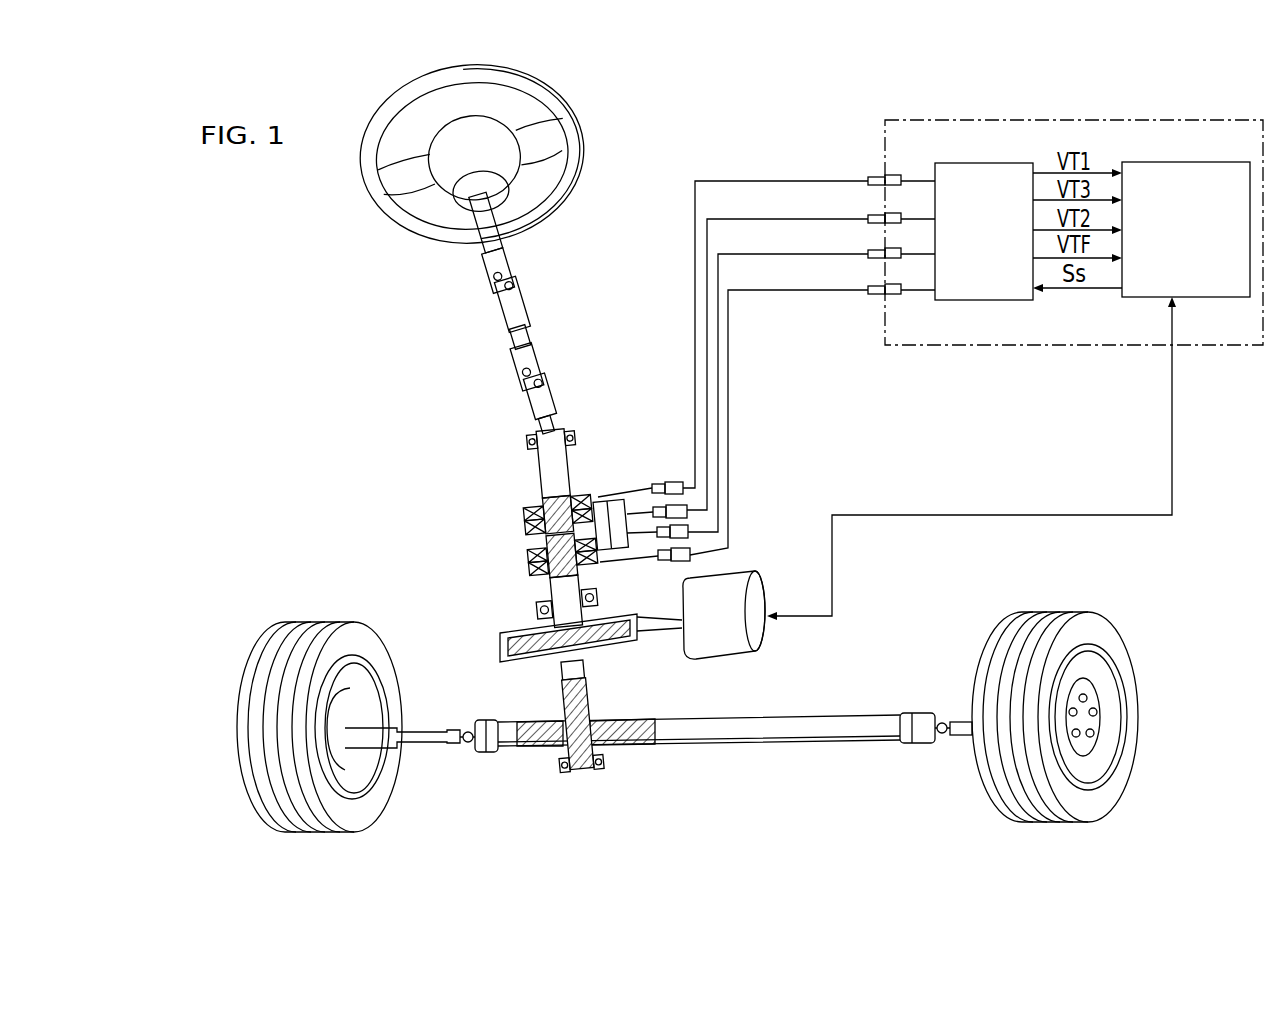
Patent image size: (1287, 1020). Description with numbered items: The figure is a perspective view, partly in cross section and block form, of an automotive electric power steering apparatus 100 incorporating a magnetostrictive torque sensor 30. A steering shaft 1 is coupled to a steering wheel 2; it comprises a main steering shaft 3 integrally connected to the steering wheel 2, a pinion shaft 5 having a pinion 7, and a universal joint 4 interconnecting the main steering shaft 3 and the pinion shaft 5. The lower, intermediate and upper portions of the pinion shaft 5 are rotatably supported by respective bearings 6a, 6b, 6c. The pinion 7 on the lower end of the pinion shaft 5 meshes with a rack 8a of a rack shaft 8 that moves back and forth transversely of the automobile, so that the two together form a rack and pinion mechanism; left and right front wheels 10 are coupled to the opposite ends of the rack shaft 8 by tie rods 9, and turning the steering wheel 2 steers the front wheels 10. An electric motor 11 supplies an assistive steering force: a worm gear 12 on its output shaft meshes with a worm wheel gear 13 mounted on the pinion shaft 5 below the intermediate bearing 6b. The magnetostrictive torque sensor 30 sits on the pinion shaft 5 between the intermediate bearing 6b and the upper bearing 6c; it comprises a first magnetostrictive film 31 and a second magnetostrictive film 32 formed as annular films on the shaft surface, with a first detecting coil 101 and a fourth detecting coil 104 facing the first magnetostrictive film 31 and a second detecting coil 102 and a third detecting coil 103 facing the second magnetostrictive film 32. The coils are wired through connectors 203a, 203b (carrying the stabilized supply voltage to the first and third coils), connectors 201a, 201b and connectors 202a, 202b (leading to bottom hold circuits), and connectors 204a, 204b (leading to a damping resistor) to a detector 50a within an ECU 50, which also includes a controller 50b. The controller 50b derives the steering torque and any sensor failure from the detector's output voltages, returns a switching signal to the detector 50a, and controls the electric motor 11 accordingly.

The steering shaft 1 is at (470, 288).
The steering wheel 2 is at (580, 142).
The main steering shaft 3 is at (478, 250).
The universal joint 4 is at (500, 323).
The pinion shaft 5 is at (560, 660).
The lower bearing 6a is at (562, 768).
The intermediate bearing 6b is at (596, 600).
The upper bearing 6c is at (527, 446).
The pinion 7 is at (590, 711).
The rack shaft 8 is at (732, 740).
The rack 8a is at (623, 742).
The tie rod 9 is at (425, 738).
The front wheel 10 is at (358, 642).
The electric motor 11 is at (704, 645).
The worm gear 12 is at (604, 645).
The worm wheel gear 13 is at (500, 659).
The magnetostrictive torque sensor 30 is at (510, 542).
The first magnetostrictive film 31 is at (557, 492).
The second magnetostrictive film 32 is at (558, 578).
The ECU 50 is at (1156, 113).
The detector 50a is at (1012, 163).
The controller 50b is at (1230, 162).
The automotive electric power steering apparatus 100 is at (773, 126).
The first detecting coil 101 is at (522, 510).
The second detecting coil 102 is at (528, 552).
The third detecting coil 103 is at (528, 572).
The fourth detecting coil 104 is at (522, 528).
The connector 201a is at (870, 214).
The connector 201b is at (650, 508).
The connector 202a is at (870, 249).
The connector 202b is at (722, 536).
The connector 203a is at (870, 177).
The connector 203b is at (662, 472).
The connector 204a is at (870, 285).
The connector 204b is at (675, 562).